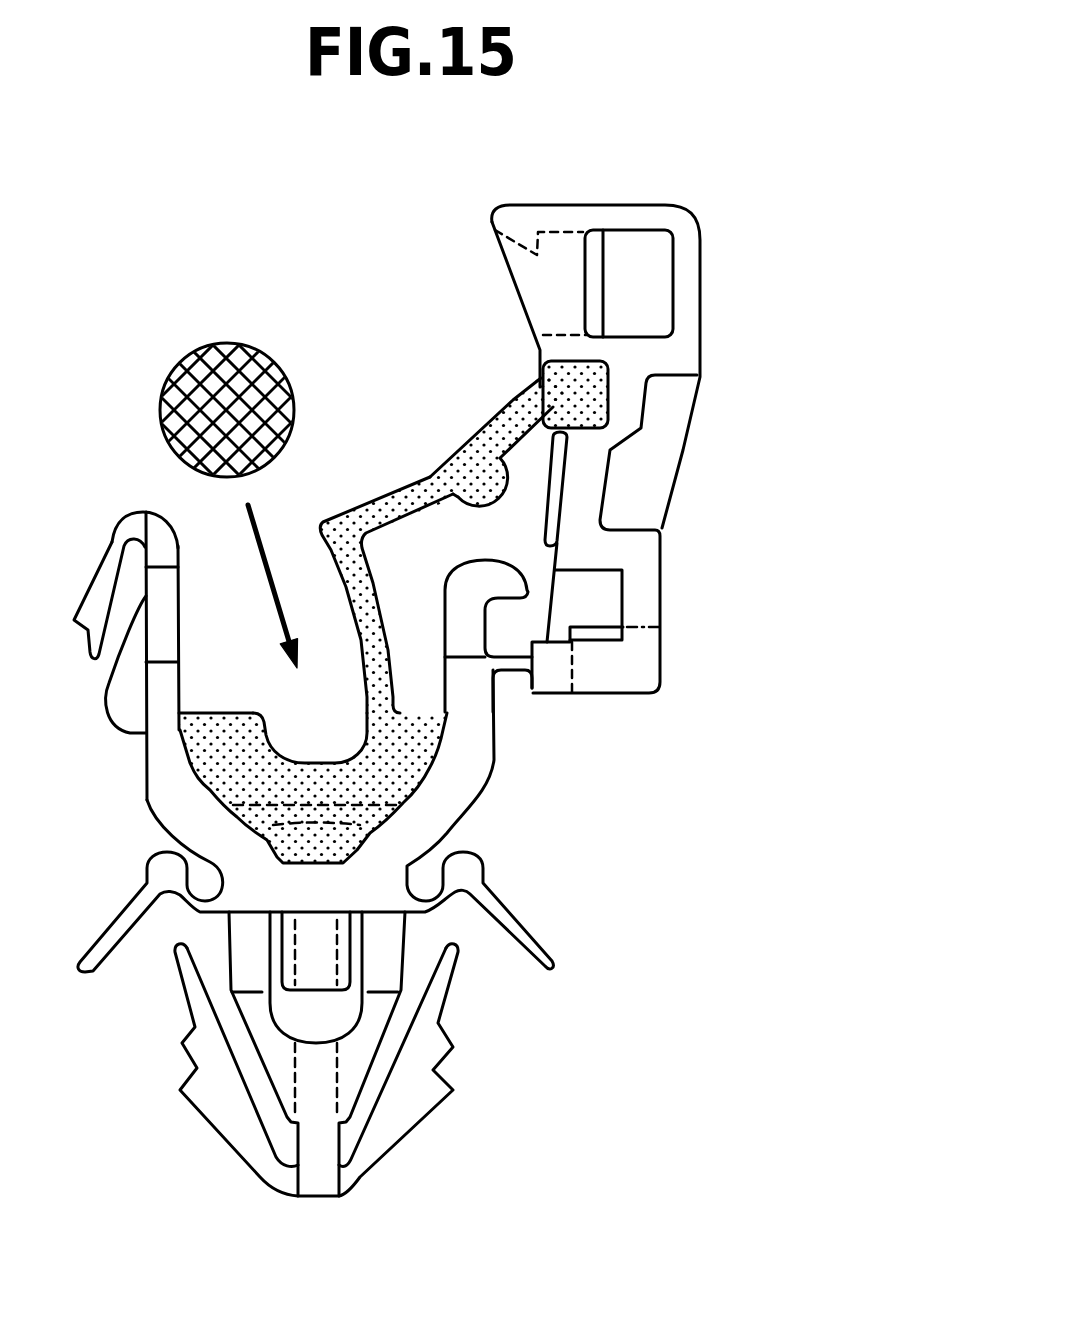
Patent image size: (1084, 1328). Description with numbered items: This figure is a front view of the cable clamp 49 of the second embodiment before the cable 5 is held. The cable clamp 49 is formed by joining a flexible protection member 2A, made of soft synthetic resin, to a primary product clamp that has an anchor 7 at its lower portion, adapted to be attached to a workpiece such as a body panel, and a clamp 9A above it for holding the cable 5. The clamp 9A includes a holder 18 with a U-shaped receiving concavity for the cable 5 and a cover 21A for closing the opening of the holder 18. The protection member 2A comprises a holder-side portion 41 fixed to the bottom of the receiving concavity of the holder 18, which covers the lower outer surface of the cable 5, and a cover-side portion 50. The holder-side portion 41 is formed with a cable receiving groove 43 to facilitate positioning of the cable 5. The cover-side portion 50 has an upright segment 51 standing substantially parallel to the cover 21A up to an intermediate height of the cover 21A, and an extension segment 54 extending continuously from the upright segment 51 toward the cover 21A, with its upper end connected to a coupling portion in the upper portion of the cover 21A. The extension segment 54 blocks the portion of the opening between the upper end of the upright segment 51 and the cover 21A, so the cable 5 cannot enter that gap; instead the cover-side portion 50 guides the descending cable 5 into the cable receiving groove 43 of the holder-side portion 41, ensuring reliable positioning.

The cable 5 is at (160, 403).
The anchor 7 is at (498, 1024).
The clamp 9A is at (808, 693).
The holder 18 is at (492, 772).
The cover 21A is at (665, 585).
The protection member 2A is at (518, 388).
The holder-side portion 41 is at (220, 755).
The cable receiving groove 43 is at (298, 753).
The cable clamp 49 is at (806, 312).
The cover-side portion 50 is at (441, 507).
The upright segment 51 is at (413, 573).
The extension segment 54 is at (430, 467).